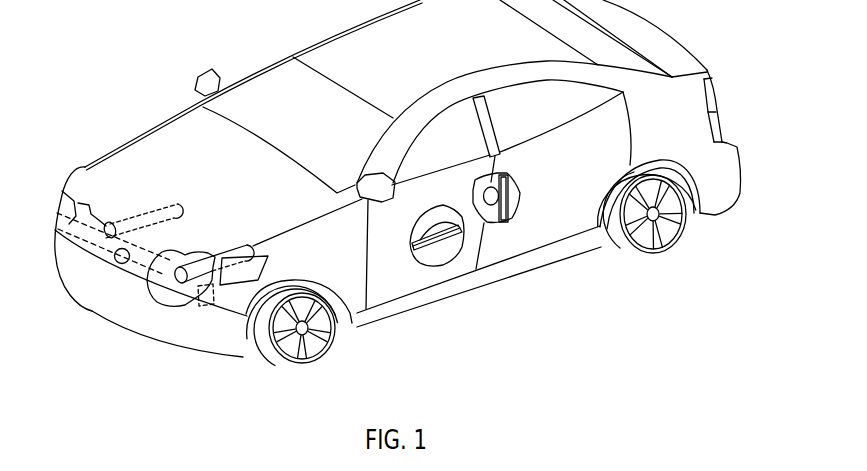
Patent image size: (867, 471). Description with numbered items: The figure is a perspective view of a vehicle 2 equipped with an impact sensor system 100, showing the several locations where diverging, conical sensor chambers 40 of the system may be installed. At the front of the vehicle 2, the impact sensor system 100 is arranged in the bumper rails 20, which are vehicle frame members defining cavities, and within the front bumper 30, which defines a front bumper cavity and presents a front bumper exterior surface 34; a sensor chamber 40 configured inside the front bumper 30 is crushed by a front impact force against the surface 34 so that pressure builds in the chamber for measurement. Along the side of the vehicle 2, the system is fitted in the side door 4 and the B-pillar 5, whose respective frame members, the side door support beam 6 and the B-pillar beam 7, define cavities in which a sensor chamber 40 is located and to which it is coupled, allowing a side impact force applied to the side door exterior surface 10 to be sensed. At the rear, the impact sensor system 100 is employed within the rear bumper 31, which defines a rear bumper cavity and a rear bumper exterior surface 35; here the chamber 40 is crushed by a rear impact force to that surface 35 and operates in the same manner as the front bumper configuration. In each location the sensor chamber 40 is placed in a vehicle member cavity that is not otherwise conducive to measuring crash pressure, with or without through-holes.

The vehicle 2 is at (122, 24).
The side door 4 is at (387, 249).
The B-pillar 5 is at (491, 118).
The side door support beam 6 is at (431, 268).
The B-pillar beam 7 is at (504, 216).
The side door exterior surface 10 is at (374, 288).
The bumper rail 20 is at (221, 236).
The front bumper 30 is at (80, 258).
The rear bumper 31 is at (738, 158).
The front bumper exterior surface 34 is at (110, 297).
The rear bumper exterior surface 35 is at (735, 146).
The sensor chamber 40 is at (60, 232).
The impact sensor system 100 is at (103, 206).